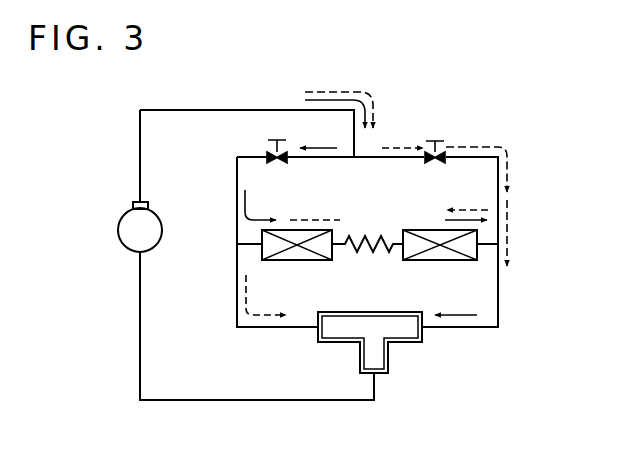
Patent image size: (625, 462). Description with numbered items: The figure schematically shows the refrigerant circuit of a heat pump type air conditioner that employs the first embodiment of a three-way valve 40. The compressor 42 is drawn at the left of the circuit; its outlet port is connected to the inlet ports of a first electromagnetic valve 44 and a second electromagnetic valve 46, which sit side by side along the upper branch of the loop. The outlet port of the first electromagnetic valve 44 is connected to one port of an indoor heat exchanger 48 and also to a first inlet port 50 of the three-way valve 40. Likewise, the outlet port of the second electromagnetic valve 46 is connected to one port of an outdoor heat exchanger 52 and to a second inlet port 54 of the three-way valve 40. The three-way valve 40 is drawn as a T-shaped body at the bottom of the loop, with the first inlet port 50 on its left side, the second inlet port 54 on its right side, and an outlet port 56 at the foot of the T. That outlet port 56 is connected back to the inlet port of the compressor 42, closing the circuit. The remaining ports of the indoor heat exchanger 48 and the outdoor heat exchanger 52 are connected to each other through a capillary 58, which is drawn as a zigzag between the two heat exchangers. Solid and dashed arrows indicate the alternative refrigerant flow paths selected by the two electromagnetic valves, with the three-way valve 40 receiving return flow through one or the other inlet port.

The three-way valve 40 is at (372, 310).
The compressor 42 is at (162, 232).
The first electromagnetic valve 44 is at (277, 164).
The second electromagnetic valve 46 is at (435, 164).
The indoor heat exchanger 48 is at (292, 260).
The first inlet port 50 is at (316, 334).
The outdoor heat exchanger 52 is at (441, 260).
The second inlet port 54 is at (424, 333).
The outlet port 56 is at (388, 373).
The capillary 58 is at (366, 234).